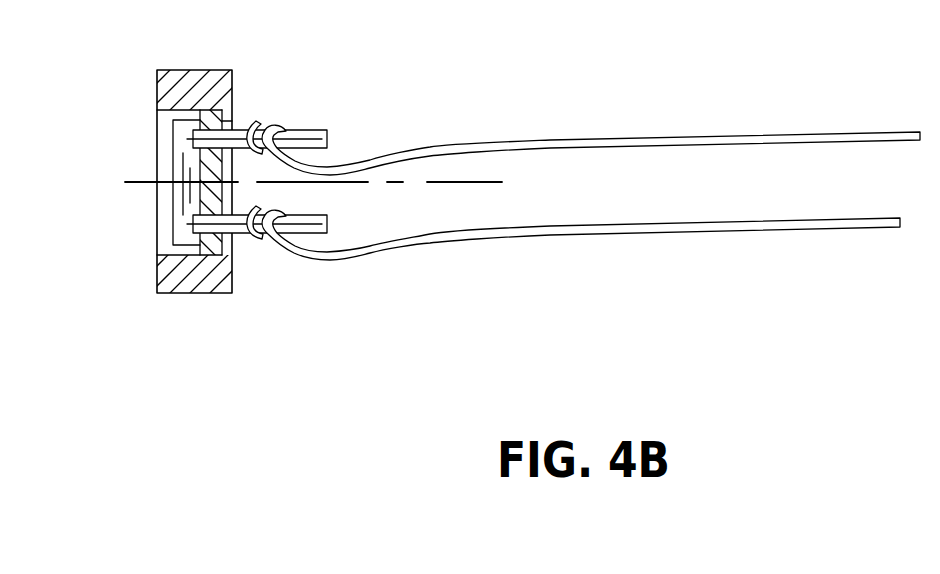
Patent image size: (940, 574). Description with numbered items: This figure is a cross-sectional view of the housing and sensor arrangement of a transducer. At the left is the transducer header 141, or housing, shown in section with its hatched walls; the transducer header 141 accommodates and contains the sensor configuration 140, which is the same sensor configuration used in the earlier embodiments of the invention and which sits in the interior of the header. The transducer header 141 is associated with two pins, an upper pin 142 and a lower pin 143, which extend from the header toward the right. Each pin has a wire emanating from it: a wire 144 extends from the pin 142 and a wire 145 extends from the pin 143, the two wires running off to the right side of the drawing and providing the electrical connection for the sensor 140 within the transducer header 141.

The sensor configuration 140 is at (173, 215).
The transducer header 141 is at (187, 92).
The pin 142 is at (303, 136).
The pin 143 is at (305, 222).
The wire 144 is at (550, 141).
The wire 145 is at (577, 235).